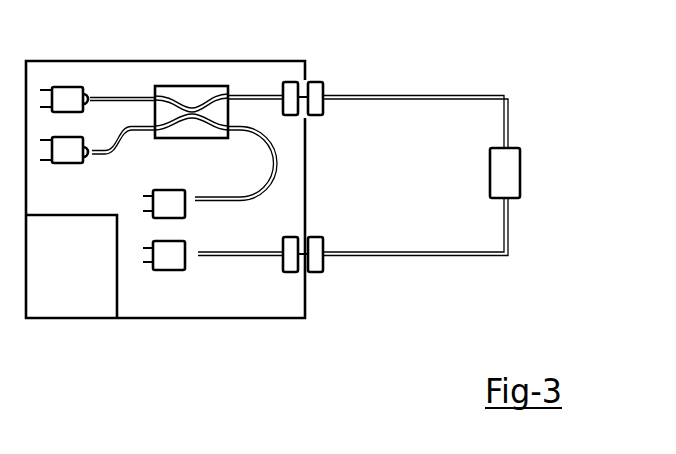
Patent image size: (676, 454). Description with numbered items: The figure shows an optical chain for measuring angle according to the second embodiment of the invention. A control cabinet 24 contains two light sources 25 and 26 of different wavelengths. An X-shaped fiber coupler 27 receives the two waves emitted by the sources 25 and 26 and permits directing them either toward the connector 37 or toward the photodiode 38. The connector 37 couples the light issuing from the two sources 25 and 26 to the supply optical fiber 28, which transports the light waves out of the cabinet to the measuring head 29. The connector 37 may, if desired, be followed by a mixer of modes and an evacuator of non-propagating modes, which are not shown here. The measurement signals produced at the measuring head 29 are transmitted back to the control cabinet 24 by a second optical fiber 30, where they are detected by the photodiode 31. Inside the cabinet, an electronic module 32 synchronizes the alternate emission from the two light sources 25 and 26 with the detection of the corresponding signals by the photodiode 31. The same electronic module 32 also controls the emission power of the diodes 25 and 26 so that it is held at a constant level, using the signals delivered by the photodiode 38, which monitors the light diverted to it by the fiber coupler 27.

The control cabinet 24 is at (270, 303).
The light source 25 is at (68, 92).
The light source 26 is at (72, 150).
The X-shaped fiber coupler 27 is at (187, 92).
The supply optical fiber 28 is at (413, 95).
The measuring head 29 is at (522, 190).
The optical fiber 30 is at (423, 254).
The photodiode 31 is at (172, 258).
The electronic module 32 is at (90, 298).
The connector 37 is at (318, 90).
The photodiode 38 is at (175, 203).